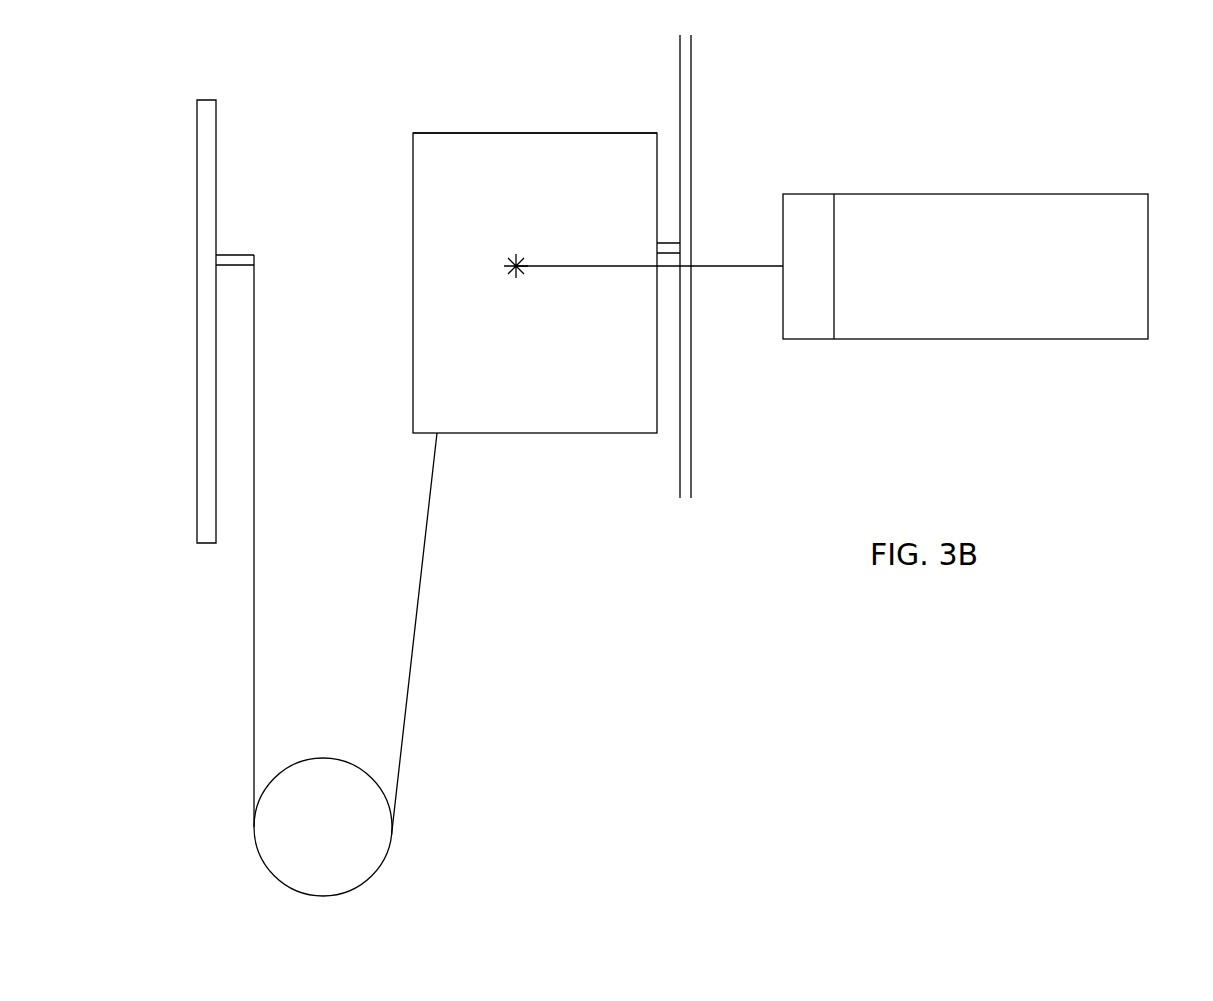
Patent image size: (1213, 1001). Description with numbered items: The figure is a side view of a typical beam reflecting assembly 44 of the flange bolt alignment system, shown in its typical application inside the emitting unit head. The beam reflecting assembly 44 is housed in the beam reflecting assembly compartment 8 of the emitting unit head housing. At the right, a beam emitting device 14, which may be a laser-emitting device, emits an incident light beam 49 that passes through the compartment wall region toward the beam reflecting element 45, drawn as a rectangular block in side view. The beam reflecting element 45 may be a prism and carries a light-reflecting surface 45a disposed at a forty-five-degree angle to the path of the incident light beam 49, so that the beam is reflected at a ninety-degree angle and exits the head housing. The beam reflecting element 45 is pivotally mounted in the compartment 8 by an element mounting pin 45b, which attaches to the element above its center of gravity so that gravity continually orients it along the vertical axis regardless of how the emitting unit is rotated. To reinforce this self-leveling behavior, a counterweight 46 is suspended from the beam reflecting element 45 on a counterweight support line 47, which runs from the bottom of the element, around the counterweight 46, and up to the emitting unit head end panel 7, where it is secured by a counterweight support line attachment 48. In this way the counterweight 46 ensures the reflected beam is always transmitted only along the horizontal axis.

The emitting unit head end panel 7 is at (212, 157).
The beam reflecting assembly compartment 8 is at (632, 58).
The beam emitting device 14 is at (1118, 272).
The beam reflecting assembly 44 is at (442, 70).
The beam reflecting element 45 is at (427, 132).
The light-reflecting surface 45a is at (505, 150).
The element mounting pin 45b is at (672, 242).
The counterweight 46 is at (330, 770).
The counterweight support line 47 is at (420, 580).
The counterweight support line attachment 48 is at (234, 255).
The incident light beam 49 is at (603, 267).